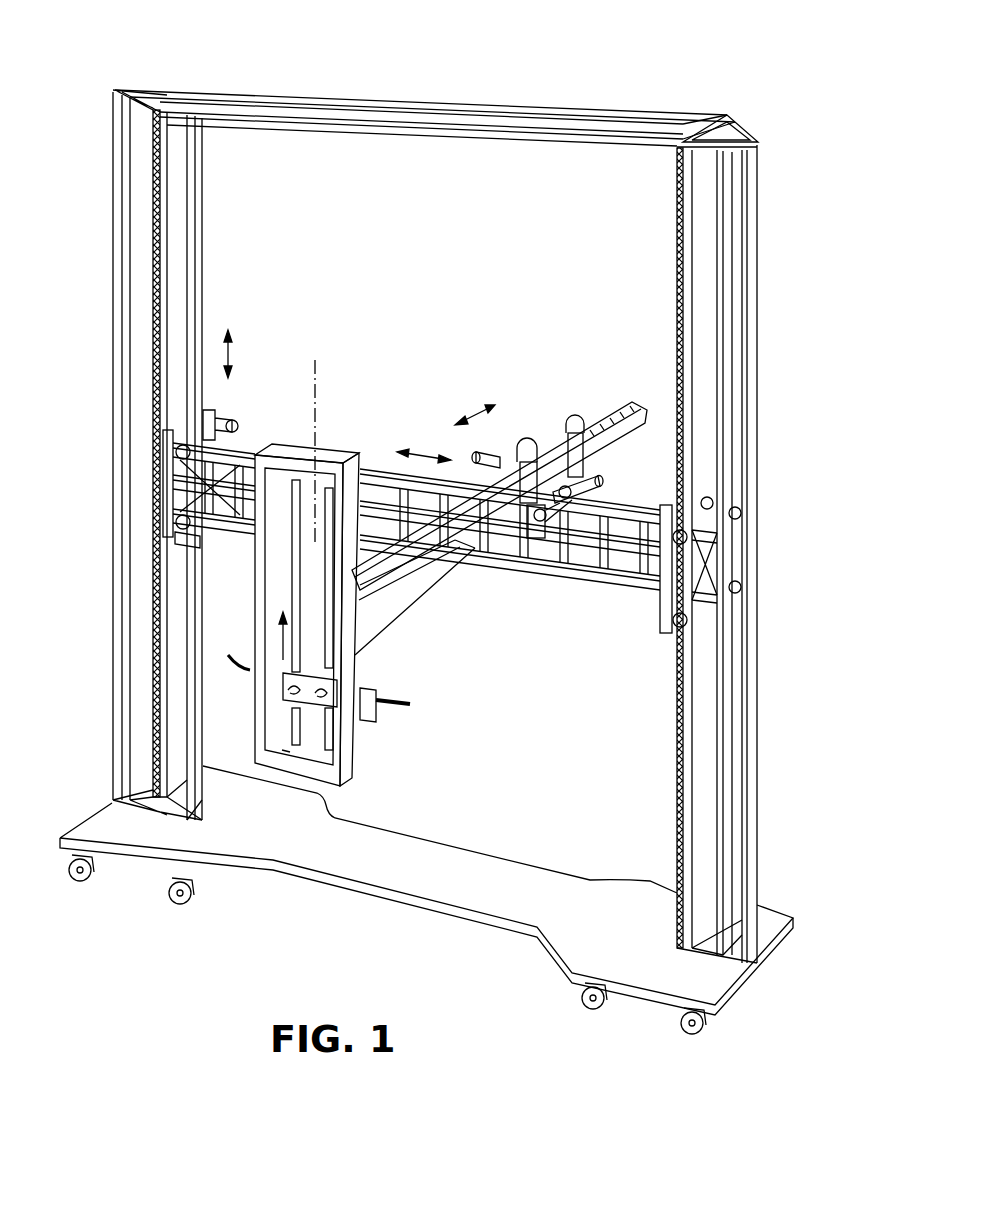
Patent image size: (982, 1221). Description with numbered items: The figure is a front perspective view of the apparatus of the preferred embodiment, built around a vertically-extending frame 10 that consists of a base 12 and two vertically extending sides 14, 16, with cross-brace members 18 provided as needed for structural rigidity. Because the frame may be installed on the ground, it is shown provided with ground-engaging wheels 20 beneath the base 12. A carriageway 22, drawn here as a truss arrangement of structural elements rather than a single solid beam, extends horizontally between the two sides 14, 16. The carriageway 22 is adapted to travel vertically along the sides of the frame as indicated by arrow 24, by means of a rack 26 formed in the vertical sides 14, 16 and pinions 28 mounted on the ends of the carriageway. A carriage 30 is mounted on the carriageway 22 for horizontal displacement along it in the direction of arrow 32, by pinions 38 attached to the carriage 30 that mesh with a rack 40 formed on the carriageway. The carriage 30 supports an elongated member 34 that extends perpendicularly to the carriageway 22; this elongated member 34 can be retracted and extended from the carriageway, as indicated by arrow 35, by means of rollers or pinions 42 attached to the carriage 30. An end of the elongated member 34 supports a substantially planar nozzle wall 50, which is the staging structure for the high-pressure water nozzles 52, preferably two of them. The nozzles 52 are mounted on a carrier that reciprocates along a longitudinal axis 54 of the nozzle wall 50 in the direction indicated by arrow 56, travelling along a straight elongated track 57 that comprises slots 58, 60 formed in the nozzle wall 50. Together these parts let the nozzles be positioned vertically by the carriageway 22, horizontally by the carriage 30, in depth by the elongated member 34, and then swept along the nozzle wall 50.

The frame 10 is at (125, 64).
The base 12 is at (425, 885).
The vertically extending side 14 is at (757, 348).
The vertically extending side 16 is at (120, 622).
The cross-brace member 18 is at (405, 118).
The ground-engaging wheel 20 is at (590, 1005).
The carriageway 22 is at (500, 575).
The arrow 24 is at (234, 354).
The rack 26 is at (155, 213).
The pinion 28 is at (165, 448).
The carriage 30 is at (590, 480).
The arrow 32 is at (430, 450).
The elongated member 34 is at (642, 405).
The arrow 35 is at (470, 413).
The pinion 38 is at (588, 512).
The rack 40 is at (595, 560).
The roller or pinion 42 is at (575, 432).
The nozzle wall 50 is at (352, 745).
The high-pressure water nozzle 52 is at (330, 702).
The longitudinal axis 54 is at (318, 379).
The arrow 56 is at (280, 627).
The track 57 is at (285, 752).
The slot 58 is at (295, 577).
The slot 60 is at (325, 650).